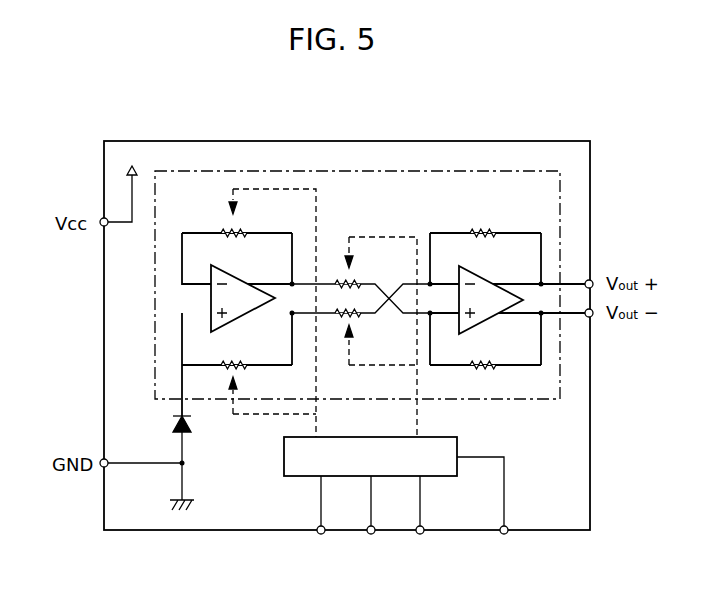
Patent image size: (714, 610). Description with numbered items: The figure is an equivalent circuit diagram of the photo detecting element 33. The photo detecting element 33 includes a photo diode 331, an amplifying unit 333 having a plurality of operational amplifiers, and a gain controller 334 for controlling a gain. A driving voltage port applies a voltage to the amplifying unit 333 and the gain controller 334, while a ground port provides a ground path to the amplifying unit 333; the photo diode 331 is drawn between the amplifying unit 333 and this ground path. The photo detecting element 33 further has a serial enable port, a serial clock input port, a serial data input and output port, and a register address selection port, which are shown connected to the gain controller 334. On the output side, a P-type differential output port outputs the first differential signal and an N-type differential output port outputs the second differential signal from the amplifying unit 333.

The photo detecting element 33 is at (620, 143).
The photo diode 331 is at (189, 429).
The amplifying unit 333 is at (527, 402).
The gain controller 334 is at (296, 478).